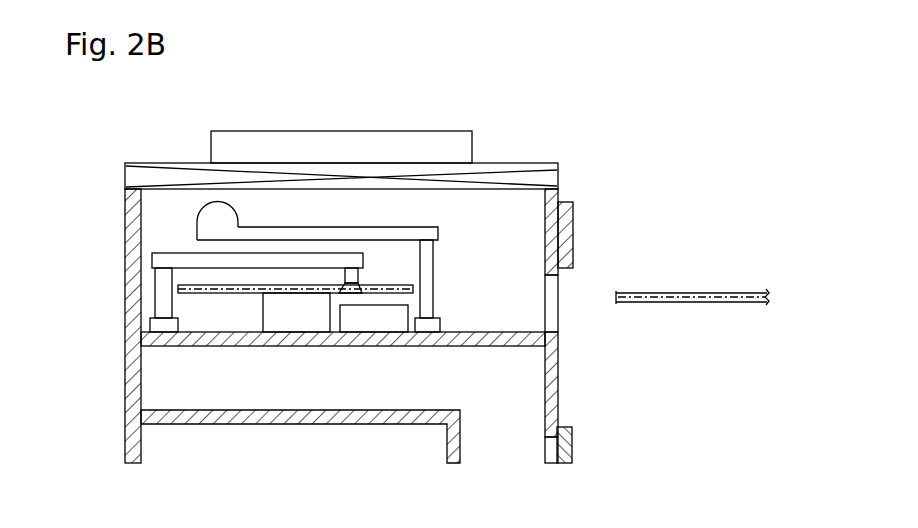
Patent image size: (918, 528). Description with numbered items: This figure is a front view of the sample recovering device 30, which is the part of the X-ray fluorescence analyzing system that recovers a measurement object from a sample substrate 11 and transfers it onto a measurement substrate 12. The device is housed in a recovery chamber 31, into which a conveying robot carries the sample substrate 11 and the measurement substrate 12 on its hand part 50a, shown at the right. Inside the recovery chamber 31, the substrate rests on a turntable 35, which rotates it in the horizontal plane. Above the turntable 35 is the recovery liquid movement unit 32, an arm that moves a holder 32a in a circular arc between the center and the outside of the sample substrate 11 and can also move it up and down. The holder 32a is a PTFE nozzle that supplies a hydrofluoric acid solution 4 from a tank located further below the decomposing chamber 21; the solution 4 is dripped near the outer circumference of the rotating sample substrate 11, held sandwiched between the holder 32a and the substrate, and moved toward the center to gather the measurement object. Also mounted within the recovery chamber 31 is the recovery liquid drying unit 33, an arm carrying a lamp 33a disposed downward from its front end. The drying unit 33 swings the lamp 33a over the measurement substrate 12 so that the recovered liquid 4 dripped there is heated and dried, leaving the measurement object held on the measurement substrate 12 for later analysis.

The hydrofluoric acid solution 4 is at (390, 287).
The sample substrate 11 is at (444, 181).
The measurement substrate 12 is at (363, 284).
The decomposing chamber 21 is at (386, 407).
The sample recovering device 30 is at (616, 246).
The recovery chamber 31 is at (125, 270).
The recovery liquid movement unit 32 is at (185, 252).
The holder 32a is at (365, 256).
The recovery liquid drying unit 33 is at (438, 233).
The lamp 33a is at (202, 208).
The turntable 35 is at (265, 317).
The hand part 50a is at (692, 302).